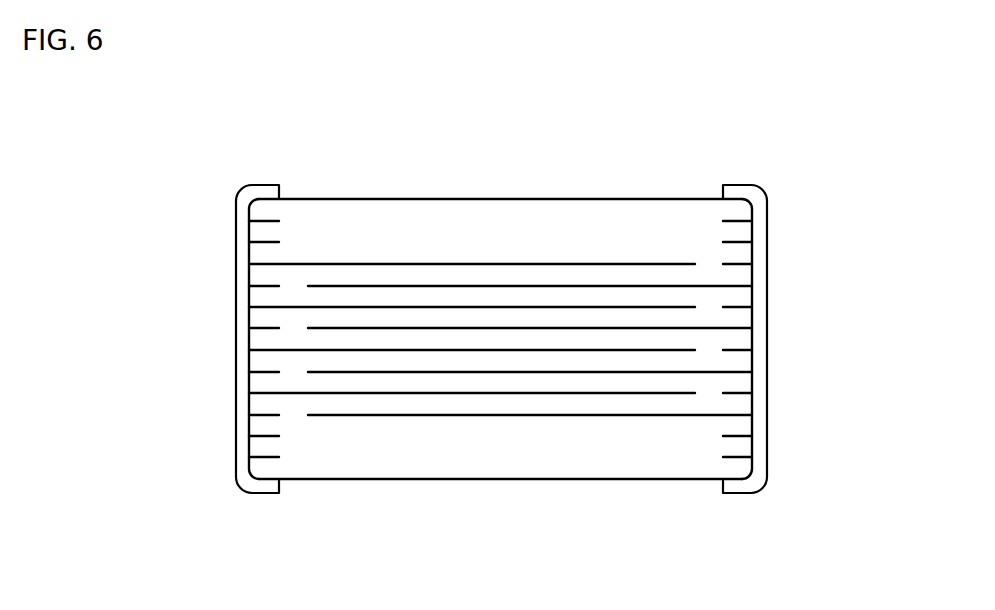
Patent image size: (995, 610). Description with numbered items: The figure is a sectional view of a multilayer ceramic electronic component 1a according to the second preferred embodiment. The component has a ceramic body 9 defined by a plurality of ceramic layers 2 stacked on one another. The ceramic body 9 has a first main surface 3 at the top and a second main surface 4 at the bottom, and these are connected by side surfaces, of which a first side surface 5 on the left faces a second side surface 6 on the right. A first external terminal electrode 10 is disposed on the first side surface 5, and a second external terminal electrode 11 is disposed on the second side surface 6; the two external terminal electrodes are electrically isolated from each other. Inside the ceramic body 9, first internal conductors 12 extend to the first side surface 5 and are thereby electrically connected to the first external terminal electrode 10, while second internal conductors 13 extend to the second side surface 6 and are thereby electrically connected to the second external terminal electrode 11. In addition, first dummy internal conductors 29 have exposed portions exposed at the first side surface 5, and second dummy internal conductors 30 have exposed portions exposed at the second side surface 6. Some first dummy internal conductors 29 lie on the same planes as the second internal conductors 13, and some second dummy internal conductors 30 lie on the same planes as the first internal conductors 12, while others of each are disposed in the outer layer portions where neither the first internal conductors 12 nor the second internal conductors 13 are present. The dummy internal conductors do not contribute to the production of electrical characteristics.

The multilayer ceramic electronic component 1a is at (143, 132).
The ceramic layer 2 is at (453, 302).
The first main surface 3 is at (515, 199).
The second main surface 4 is at (452, 479).
The first side surface 5 is at (250, 322).
The second side surface 6 is at (755, 336).
The ceramic body 9 is at (681, 188).
The first external terminal electrode 10 is at (236, 257).
The second external terminal electrode 11 is at (767, 228).
The first internal conductors 12 is at (375, 307).
The second internal conductors 13 is at (598, 415).
The first dummy internal conductors 29 is at (265, 437).
The second dummy internal conductors 30 is at (737, 445).